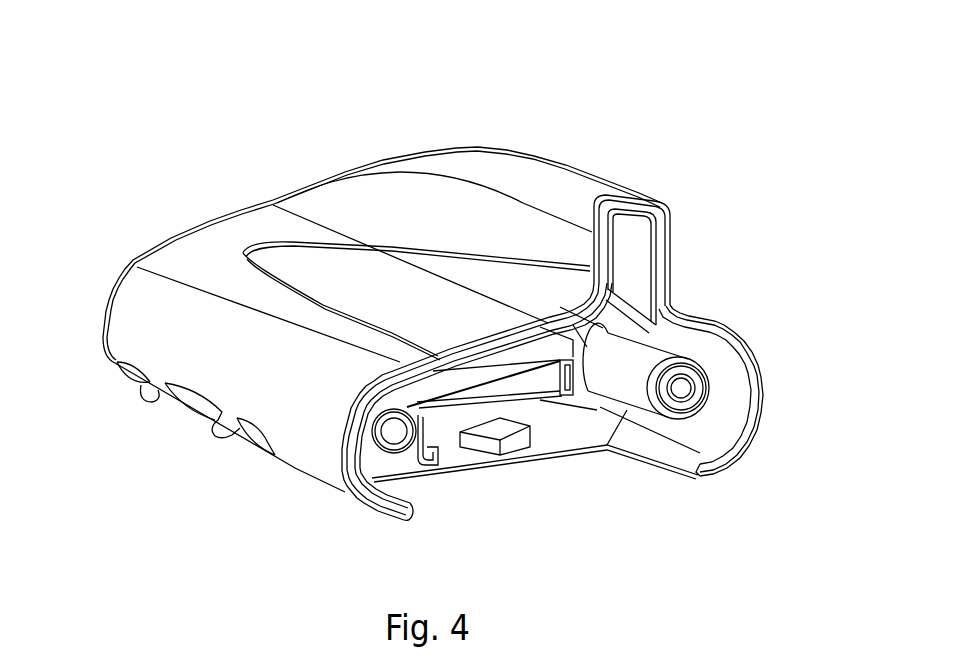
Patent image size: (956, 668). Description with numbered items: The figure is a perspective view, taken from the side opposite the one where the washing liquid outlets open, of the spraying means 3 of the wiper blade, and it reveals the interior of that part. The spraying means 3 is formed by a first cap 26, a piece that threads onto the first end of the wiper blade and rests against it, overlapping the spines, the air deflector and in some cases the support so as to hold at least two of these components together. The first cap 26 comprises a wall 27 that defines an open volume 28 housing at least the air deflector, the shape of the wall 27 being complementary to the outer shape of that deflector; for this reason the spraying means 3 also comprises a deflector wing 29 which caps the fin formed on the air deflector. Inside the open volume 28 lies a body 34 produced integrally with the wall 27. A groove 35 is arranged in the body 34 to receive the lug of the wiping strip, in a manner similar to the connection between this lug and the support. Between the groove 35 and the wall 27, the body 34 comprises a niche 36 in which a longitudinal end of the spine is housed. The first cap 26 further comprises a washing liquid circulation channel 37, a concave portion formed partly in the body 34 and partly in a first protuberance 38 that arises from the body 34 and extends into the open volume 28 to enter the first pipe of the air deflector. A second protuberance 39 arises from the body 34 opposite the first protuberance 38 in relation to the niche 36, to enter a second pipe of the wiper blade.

The spraying means 3 is at (716, 168).
The first cap 26 is at (202, 236).
The wall 27 is at (380, 200).
The open volume 28 is at (640, 264).
The deflector wing 29 is at (560, 190).
The body 34 is at (568, 427).
The groove 35 is at (443, 430).
The niche 36 is at (512, 382).
The washing liquid circulation channel 37 is at (696, 393).
The first protuberance 38 is at (636, 354).
The second protuberance 39 is at (372, 449).